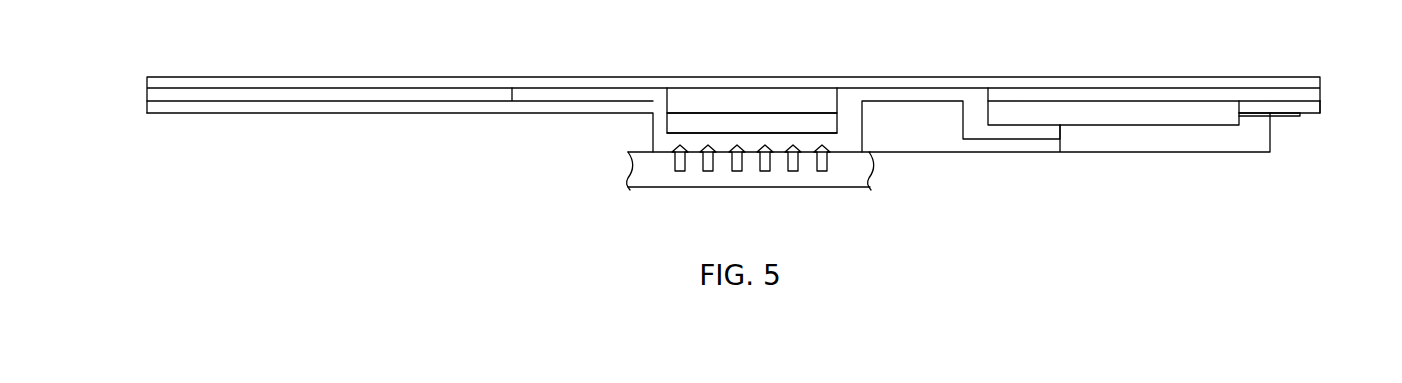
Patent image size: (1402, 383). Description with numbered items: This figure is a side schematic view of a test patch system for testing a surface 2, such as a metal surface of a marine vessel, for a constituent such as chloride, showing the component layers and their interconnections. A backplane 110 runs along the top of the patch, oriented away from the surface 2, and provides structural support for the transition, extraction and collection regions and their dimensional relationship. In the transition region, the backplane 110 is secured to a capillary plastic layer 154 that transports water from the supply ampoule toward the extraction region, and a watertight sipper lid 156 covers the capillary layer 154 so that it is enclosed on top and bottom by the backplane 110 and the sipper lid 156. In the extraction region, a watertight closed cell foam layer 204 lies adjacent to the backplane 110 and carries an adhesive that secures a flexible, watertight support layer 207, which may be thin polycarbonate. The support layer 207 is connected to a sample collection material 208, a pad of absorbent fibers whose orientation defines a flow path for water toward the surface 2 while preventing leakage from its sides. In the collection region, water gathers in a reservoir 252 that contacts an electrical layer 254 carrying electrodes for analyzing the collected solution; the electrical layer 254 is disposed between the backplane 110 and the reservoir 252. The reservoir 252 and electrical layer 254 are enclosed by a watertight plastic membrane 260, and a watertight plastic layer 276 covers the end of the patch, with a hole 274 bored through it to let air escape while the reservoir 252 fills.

The surface 2 is at (638, 176).
The backplane 110 is at (535, 80).
The capillary plastic layer 154 is at (328, 95).
The sipper lid 156 is at (397, 107).
The closed cell foam layer 204 is at (818, 100).
The support layer 207 is at (830, 119).
The sample collection material 208 is at (857, 143).
The reservoir 252 is at (1130, 115).
The electrical layer 254 is at (1163, 97).
The watertight plastic membrane 260 is at (1182, 140).
The hole 274 is at (1304, 115).
The watertight plastic layer 276 is at (1283, 110).